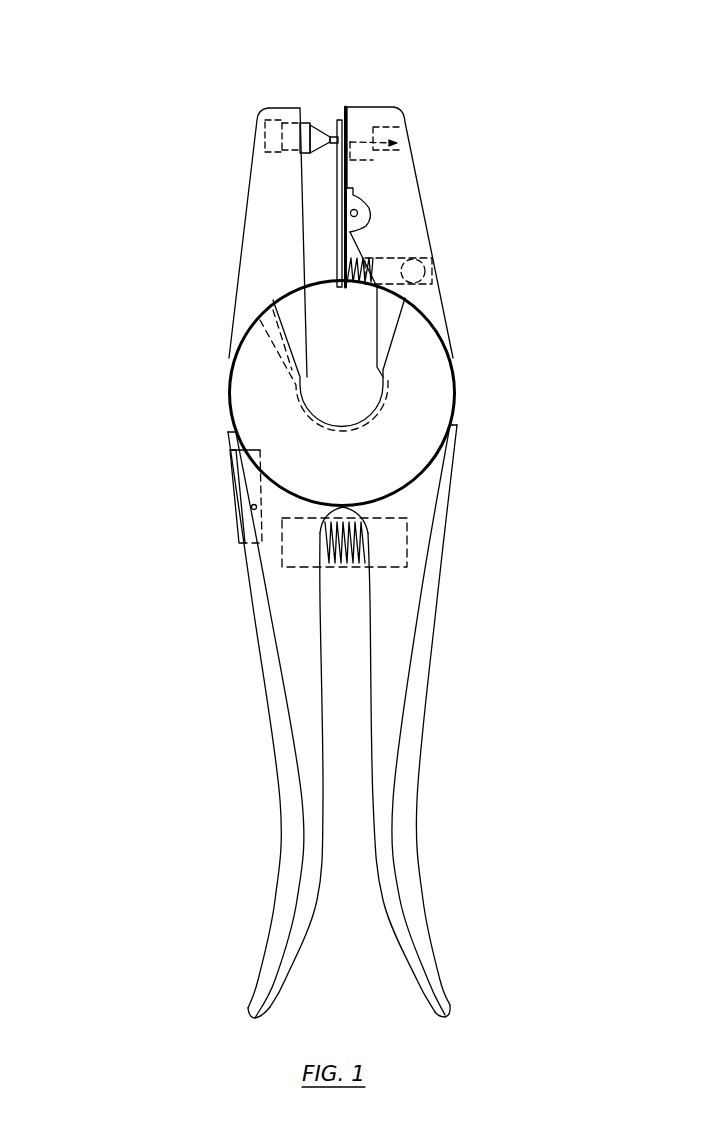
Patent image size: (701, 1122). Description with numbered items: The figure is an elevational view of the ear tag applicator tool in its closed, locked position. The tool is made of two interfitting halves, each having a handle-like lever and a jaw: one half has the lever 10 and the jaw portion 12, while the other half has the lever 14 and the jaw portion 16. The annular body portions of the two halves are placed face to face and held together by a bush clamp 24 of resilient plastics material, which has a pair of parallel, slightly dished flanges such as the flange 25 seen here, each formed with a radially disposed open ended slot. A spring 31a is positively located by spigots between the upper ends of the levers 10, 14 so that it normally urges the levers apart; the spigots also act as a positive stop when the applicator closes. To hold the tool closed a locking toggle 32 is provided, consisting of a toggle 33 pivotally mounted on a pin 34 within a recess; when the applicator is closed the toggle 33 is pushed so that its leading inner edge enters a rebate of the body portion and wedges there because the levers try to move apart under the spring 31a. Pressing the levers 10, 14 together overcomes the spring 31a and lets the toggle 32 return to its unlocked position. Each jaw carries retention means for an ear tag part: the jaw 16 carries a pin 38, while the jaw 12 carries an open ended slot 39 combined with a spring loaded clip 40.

The lever 10 is at (298, 828).
The jaw portion 12 is at (403, 247).
The lever 14 is at (402, 828).
The jaw portion 16 is at (262, 237).
The bush clamp 24 is at (440, 450).
The flange 25 is at (433, 383).
The spring 31a is at (348, 562).
The locking toggle 32 is at (227, 475).
The toggle 33 is at (242, 545).
The pin 34 is at (252, 510).
The pin 38 is at (337, 137).
The open ended slot 39 is at (358, 120).
The spring loaded clip 40 is at (345, 245).